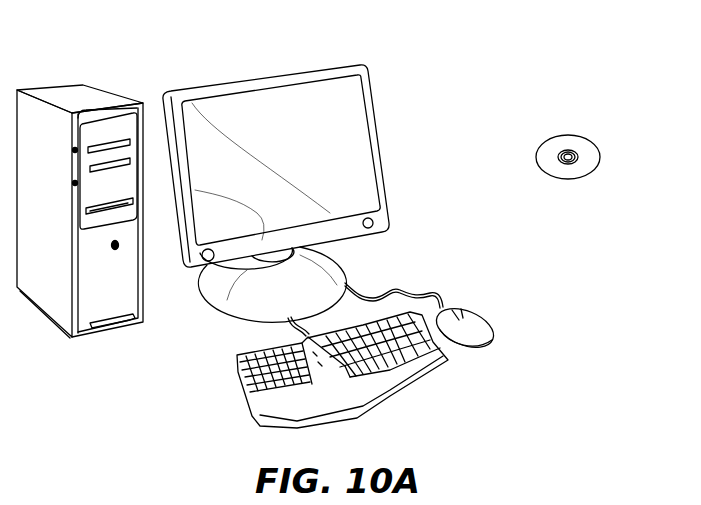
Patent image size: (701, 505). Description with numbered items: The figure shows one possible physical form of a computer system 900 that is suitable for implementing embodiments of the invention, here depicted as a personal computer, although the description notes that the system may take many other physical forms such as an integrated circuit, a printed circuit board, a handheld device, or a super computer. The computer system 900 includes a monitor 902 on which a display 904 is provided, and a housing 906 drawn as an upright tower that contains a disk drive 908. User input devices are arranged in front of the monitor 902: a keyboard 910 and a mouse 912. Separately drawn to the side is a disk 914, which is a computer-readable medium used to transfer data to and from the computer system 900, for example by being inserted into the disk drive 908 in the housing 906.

The computer system 900 is at (498, 48).
The monitor 902 is at (385, 163).
The display 904 is at (342, 103).
The housing 906 is at (67, 93).
The disk drive 908 is at (135, 207).
The keyboard 910 is at (243, 402).
The mouse 912 is at (485, 320).
The disk 914 is at (587, 135).